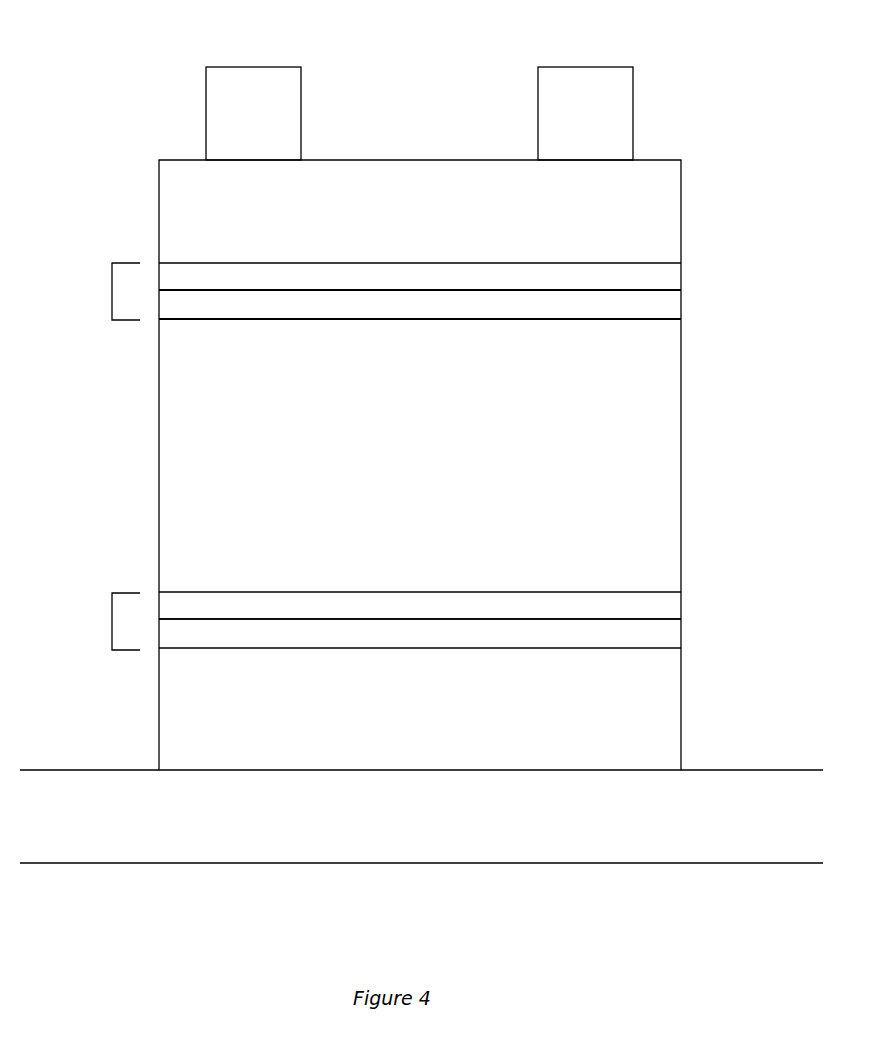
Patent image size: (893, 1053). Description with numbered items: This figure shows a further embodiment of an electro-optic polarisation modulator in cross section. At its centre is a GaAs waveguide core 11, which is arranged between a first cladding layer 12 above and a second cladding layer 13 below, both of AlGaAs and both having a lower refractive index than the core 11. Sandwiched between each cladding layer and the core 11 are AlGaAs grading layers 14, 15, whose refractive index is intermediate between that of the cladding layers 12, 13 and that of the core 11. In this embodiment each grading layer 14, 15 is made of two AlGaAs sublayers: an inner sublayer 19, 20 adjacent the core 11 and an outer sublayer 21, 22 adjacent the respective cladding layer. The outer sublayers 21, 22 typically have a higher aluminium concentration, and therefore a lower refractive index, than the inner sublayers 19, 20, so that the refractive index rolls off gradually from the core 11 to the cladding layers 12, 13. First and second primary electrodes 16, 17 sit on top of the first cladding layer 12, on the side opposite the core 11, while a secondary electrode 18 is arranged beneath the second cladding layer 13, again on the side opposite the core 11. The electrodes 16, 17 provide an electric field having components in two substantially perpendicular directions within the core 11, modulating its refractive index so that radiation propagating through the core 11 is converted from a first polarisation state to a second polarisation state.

The waveguide core 11 is at (213, 488).
The first cladding layer 12 is at (667, 232).
The second cladding layer 13 is at (668, 705).
The grading layer 14 is at (112, 292).
The grading layer 15 is at (112, 621).
The first primary electrode 16 is at (225, 102).
The second primary electrode 17 is at (595, 117).
The secondary electrode 18 is at (145, 815).
The inner sublayer 19 is at (658, 304).
The inner sublayer 20 is at (660, 607).
The outer sublayer 21 is at (657, 277).
The outer sublayer 22 is at (657, 633).